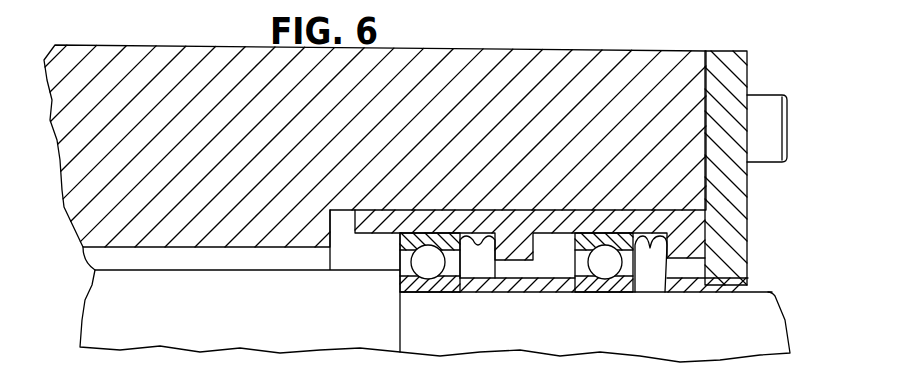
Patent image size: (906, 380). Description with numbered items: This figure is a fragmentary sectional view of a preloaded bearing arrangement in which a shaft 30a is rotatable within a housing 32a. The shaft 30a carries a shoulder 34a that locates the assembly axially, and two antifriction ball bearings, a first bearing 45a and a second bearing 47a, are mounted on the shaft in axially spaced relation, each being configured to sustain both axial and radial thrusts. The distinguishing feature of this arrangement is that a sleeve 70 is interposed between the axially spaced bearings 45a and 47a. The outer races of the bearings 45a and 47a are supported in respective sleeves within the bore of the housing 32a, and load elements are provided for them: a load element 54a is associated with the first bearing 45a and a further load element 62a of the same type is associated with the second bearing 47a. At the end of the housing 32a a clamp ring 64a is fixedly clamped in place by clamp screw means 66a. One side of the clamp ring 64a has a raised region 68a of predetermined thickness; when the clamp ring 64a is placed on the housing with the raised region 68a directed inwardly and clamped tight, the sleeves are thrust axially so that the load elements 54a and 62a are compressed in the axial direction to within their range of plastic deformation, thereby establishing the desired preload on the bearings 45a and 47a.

The shaft 30a is at (760, 307).
The housing 32a is at (701, 51).
The shoulder 34a is at (400, 335).
The antifriction ball bearing 45a is at (425, 287).
The second antifriction bearing 47a is at (605, 291).
The load element 54a is at (483, 293).
The load element 62a is at (666, 294).
The clamp ring 64a is at (743, 65).
The clamp screw means 66a is at (778, 121).
The raised region 68a is at (740, 225).
The sleeve 70 is at (525, 293).